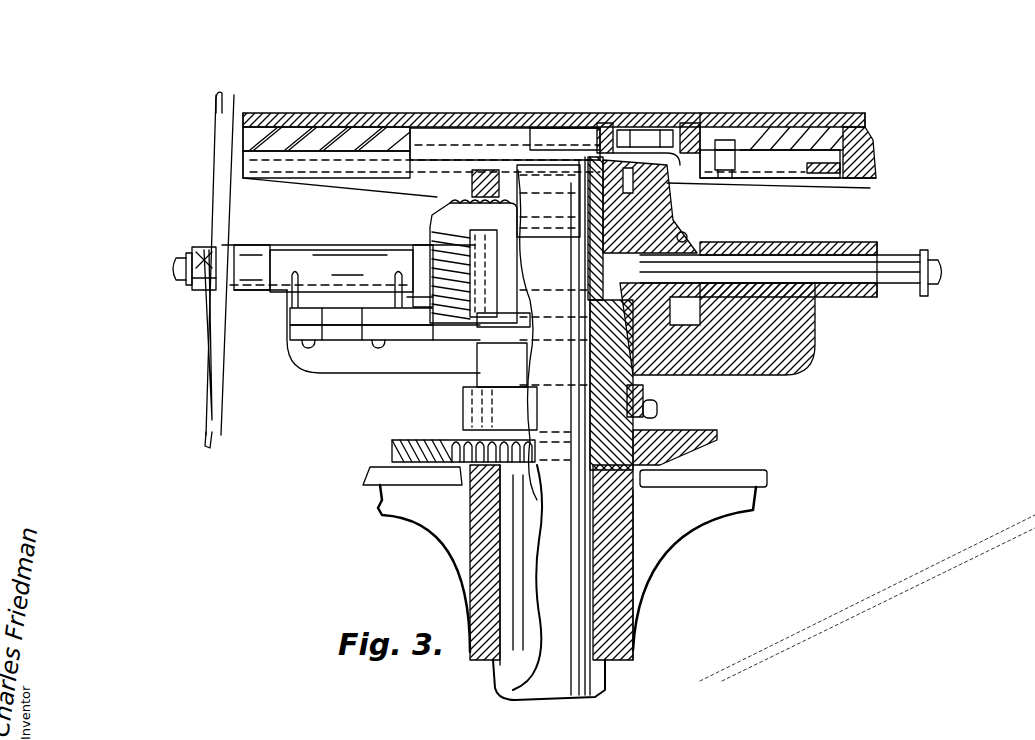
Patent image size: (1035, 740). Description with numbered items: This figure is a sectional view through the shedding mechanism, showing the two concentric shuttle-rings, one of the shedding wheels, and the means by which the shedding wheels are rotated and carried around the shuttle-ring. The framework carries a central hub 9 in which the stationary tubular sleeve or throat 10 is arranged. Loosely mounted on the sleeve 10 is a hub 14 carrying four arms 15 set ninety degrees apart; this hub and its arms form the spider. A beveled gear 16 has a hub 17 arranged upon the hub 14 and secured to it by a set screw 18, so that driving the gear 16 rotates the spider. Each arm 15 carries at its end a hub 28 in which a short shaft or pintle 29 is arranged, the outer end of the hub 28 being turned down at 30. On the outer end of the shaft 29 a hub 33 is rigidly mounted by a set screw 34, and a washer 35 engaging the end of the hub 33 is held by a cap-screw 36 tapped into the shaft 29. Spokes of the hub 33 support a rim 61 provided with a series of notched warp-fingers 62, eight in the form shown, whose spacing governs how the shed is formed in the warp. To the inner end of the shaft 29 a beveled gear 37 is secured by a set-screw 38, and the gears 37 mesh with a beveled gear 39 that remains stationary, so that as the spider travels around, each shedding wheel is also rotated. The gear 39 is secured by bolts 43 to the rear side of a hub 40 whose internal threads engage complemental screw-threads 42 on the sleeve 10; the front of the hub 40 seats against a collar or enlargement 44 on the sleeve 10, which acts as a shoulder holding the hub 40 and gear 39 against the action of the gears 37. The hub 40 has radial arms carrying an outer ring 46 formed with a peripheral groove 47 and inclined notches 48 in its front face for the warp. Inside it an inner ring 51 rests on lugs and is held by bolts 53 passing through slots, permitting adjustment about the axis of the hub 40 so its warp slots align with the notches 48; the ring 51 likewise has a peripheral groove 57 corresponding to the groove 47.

The central hub 9 is at (475, 558).
The tubular sleeve or throat 10 is at (607, 682).
The hub 14 is at (633, 500).
The arms 15 is at (332, 375).
The beveled gear 16 is at (718, 435).
The hub of beveled gear 17 is at (463, 396).
The set screw 18 is at (657, 410).
The hub 28 is at (325, 265).
The short shaft or pintle 29 is at (822, 250).
The turned-down outer end of hub 30 is at (252, 247).
The hub 33 is at (193, 290).
The set screw 34 is at (200, 243).
The washer 35 is at (182, 283).
The cap-screw 36 is at (173, 267).
The beveled gear 37 is at (673, 227).
The set-screw 38 is at (690, 237).
The beveled gear 39 is at (690, 190).
The hub 40 is at (447, 180).
The screw-threads 42 is at (512, 113).
The bolts 43 is at (480, 113).
The collar or enlargement 44 is at (627, 113).
The ring 46 is at (873, 160).
The groove 47 is at (870, 145).
The inclined notches 48 is at (770, 113).
The ring 51 is at (687, 113).
The bolt 53 is at (752, 132).
The groove 57 is at (700, 117).
The rim 61 is at (228, 395).
The warp-fingers 62 is at (255, 88).